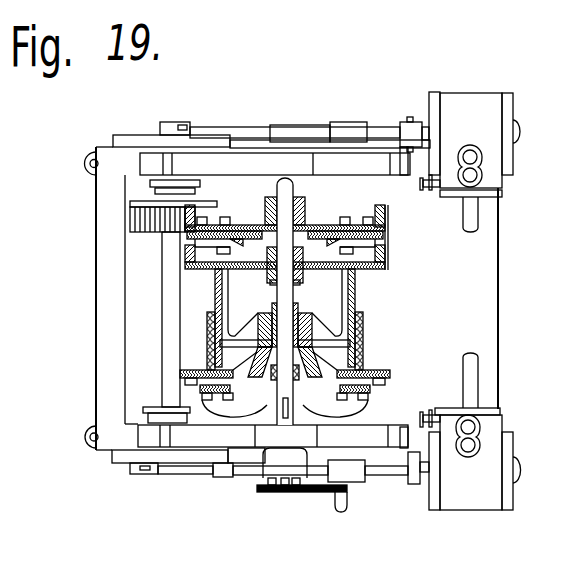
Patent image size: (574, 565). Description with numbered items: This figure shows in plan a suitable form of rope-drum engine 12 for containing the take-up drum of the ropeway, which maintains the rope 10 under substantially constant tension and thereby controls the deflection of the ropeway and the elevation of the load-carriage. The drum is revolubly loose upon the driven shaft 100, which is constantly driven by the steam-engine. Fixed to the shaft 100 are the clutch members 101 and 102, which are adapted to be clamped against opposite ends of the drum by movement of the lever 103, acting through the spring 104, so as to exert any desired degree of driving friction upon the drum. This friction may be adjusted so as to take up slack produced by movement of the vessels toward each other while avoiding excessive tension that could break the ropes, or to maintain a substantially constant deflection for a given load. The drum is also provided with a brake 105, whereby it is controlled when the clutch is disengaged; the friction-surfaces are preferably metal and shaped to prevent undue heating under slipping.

The driven shaft 100 is at (291, 190).
The clutch member 102 is at (389, 238).
The brake 105 is at (389, 257).
The rope-drum engine 12 is at (356, 297).
The rope 10 is at (363, 343).
The clutch member 101 is at (372, 390).
The spring 104 is at (343, 405).
The lever 103 is at (312, 495).